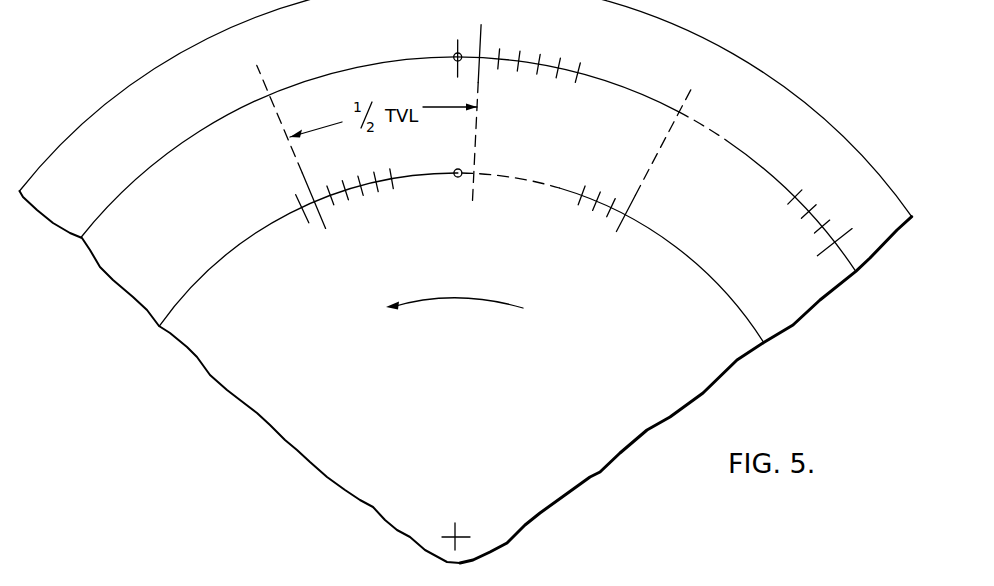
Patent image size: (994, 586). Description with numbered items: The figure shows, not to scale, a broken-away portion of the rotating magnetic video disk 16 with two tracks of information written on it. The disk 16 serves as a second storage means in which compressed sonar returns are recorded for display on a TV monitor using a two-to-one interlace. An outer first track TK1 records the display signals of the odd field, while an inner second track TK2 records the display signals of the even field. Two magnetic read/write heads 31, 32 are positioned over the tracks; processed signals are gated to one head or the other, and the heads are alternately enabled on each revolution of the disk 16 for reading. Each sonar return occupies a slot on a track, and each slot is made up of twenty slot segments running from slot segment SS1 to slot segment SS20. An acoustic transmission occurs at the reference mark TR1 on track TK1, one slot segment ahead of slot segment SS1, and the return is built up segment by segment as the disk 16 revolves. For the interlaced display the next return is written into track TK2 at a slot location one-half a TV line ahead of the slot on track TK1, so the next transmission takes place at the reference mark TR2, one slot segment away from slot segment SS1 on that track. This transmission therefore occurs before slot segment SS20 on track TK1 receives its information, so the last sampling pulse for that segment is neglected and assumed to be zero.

The rotating magnetic video disk 16 is at (750, 62).
The first track TK1 is at (195, 134).
The second track TK2 is at (240, 243).
The reference mark TR1 is at (457, 42).
The reference mark TR2 is at (295, 196).
The slot segment SS1 is at (489, 48).
The slot segment SS20 is at (625, 198).
The magnetic read/write head 31 is at (454, 60).
The magnetic read/write head 32 is at (458, 178).